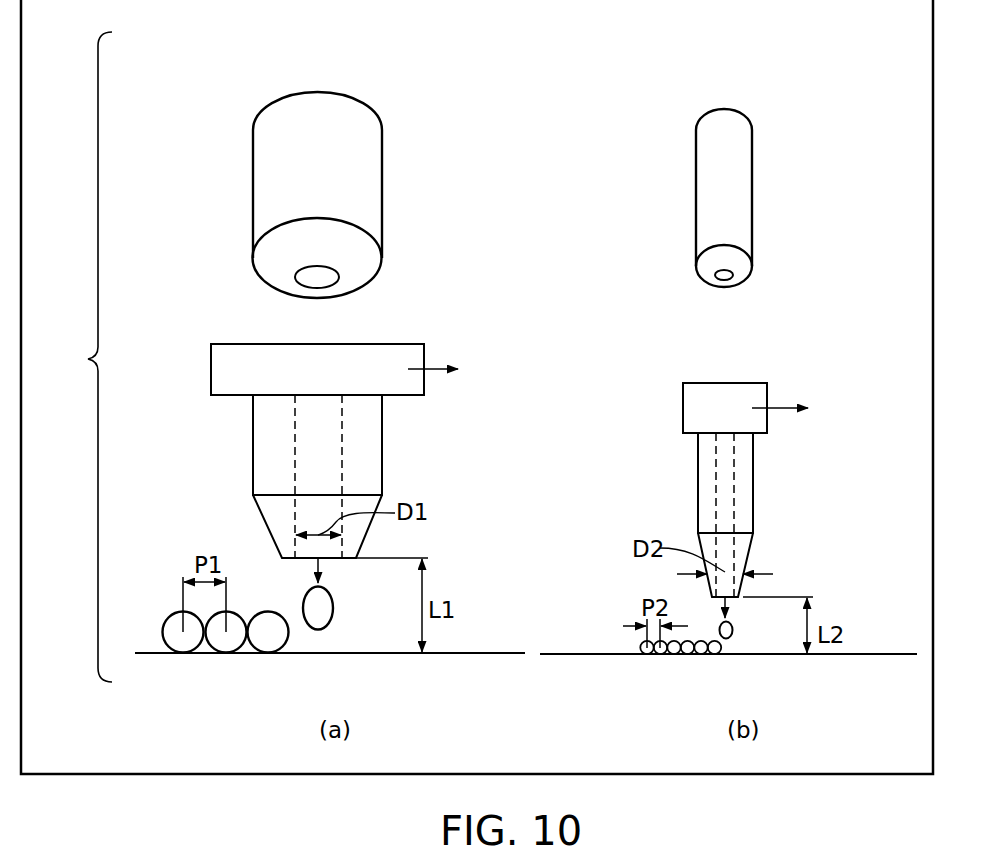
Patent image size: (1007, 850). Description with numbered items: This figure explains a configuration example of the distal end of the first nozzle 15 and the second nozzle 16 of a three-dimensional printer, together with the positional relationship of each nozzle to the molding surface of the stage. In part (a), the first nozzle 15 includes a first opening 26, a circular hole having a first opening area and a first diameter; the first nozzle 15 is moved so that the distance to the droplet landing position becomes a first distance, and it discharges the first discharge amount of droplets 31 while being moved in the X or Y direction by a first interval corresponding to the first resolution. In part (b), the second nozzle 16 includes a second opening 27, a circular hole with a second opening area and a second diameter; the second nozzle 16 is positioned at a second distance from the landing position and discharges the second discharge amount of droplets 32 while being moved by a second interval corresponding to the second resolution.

The first nozzle 15 is at (353, 97).
The second nozzle 16 is at (738, 111).
The first opening 26 is at (340, 278).
The second opening 27 is at (733, 274).
The droplets 31 is at (331, 618).
The droplets 32 is at (731, 637).